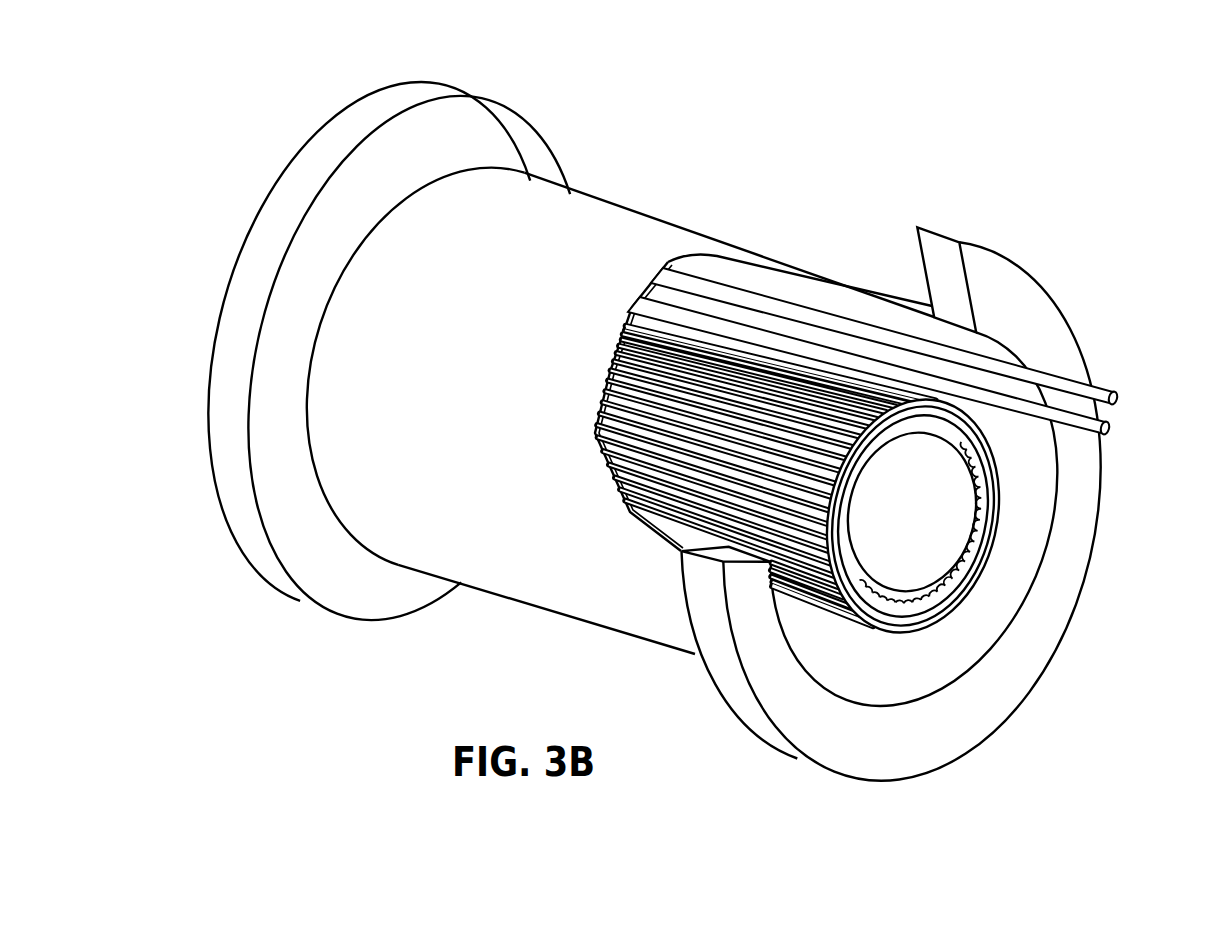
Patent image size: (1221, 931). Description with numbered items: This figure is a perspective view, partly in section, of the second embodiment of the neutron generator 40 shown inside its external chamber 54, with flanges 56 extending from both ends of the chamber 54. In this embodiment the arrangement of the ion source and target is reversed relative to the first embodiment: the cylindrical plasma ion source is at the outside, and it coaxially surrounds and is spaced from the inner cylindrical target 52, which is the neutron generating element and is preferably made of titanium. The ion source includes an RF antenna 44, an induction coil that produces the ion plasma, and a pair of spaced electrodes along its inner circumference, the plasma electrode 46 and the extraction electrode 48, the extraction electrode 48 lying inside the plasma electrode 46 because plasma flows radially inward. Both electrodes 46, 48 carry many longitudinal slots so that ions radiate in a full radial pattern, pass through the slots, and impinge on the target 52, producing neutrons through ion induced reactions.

The neutron generator 40 is at (684, 406).
The RF antenna 44 is at (1108, 387).
The plasma electrode 46 is at (993, 518).
The extraction electrode 48 is at (990, 560).
The target 52 is at (893, 440).
The chamber 54 is at (722, 240).
The flanges 56 is at (466, 86).